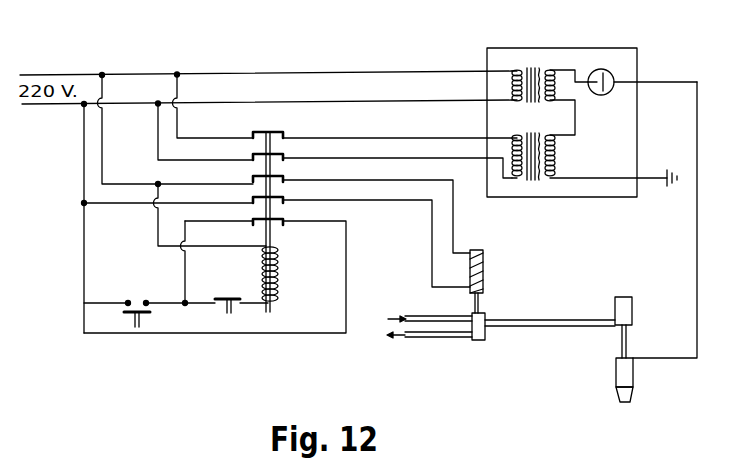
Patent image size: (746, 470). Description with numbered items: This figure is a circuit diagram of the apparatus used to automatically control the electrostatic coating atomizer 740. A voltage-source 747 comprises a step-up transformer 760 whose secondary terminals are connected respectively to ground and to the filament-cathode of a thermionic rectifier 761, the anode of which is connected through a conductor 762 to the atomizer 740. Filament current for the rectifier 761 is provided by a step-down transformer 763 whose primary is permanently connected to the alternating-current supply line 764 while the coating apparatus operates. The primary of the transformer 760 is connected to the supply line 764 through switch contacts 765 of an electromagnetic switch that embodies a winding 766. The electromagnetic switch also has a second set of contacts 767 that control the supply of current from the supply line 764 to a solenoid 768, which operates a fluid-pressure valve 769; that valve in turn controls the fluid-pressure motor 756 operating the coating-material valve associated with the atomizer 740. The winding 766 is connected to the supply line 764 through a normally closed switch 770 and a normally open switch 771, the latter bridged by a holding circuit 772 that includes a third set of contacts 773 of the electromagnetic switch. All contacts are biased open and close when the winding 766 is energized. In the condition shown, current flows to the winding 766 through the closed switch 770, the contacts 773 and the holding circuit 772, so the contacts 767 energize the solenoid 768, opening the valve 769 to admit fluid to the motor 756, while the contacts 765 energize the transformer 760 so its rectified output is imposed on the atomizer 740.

The alternating-current supply line 764 is at (284, 74).
The switch contacts 765 is at (274, 147).
The second set of contacts 767 is at (274, 189).
The third set of contacts 773 is at (273, 223).
The winding 766 is at (279, 285).
The holding circuit 772 is at (310, 334).
The normally open switch 771 is at (130, 315).
The normally closed switch 770 is at (227, 304).
The voltage-source 747 is at (637, 63).
The step-down transformer 763 is at (529, 68).
The step-up transformer 760 is at (528, 181).
The thermionic rectifier 761 is at (601, 69).
The conductor 762 is at (697, 282).
The solenoid 768 is at (484, 277).
The fluid-pressure valve 769 is at (478, 341).
The fluid-pressure motor 756 is at (632, 311).
The atomizer 740 is at (617, 377).